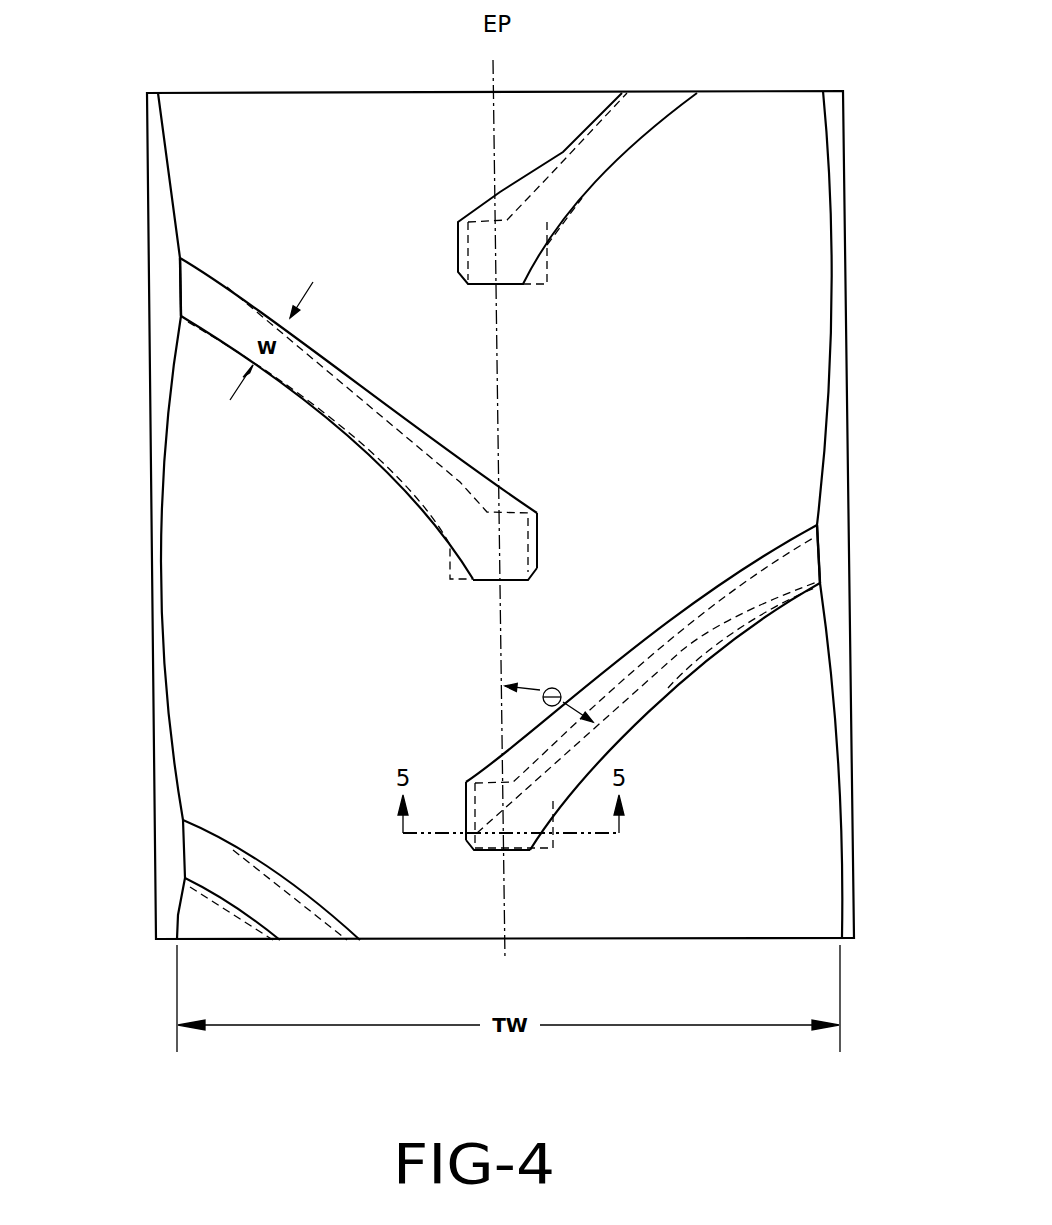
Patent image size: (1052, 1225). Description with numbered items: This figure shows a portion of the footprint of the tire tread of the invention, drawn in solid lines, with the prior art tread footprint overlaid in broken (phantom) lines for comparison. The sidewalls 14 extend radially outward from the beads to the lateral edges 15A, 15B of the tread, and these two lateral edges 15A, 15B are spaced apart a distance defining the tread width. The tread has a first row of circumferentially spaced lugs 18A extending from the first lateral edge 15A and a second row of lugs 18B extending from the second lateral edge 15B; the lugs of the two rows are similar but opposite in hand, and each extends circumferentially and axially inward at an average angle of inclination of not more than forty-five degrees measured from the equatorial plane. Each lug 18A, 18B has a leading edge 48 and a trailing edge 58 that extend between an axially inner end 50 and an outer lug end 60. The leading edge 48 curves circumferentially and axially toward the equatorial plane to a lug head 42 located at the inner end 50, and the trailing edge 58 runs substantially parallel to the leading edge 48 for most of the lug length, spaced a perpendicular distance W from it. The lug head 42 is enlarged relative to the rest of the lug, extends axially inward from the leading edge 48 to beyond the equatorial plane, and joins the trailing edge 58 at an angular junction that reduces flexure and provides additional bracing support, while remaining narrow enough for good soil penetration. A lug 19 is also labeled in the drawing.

The sidewall 14 is at (170, 786).
The first lateral edge 15A is at (843, 880).
The second lateral edge 15B is at (177, 907).
The first row of lugs 18A is at (803, 522).
The second row of lugs 18B is at (190, 300).
The lug 19 is at (640, 110).
The lug head 42 is at (512, 270).
The leading edge 48 is at (328, 425).
The axially inner end 50 is at (540, 540).
The trailing edge 58 is at (340, 358).
The outer lug end 60 is at (176, 280).